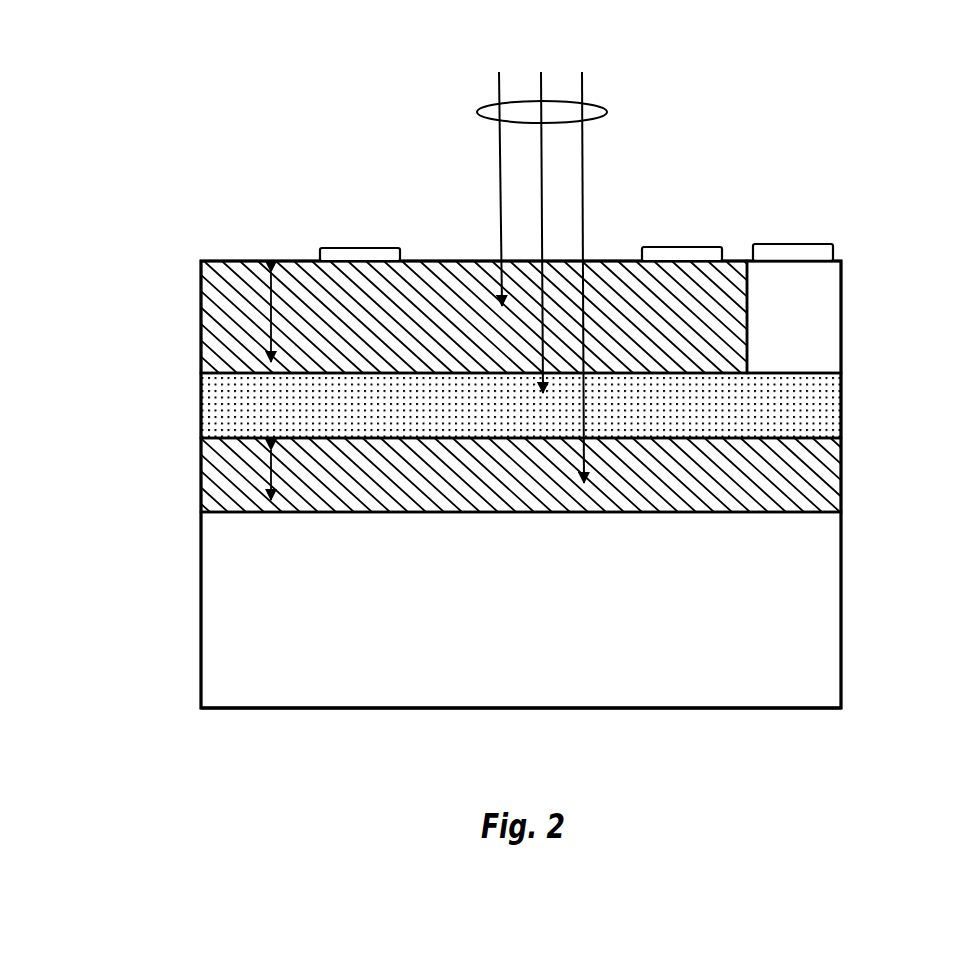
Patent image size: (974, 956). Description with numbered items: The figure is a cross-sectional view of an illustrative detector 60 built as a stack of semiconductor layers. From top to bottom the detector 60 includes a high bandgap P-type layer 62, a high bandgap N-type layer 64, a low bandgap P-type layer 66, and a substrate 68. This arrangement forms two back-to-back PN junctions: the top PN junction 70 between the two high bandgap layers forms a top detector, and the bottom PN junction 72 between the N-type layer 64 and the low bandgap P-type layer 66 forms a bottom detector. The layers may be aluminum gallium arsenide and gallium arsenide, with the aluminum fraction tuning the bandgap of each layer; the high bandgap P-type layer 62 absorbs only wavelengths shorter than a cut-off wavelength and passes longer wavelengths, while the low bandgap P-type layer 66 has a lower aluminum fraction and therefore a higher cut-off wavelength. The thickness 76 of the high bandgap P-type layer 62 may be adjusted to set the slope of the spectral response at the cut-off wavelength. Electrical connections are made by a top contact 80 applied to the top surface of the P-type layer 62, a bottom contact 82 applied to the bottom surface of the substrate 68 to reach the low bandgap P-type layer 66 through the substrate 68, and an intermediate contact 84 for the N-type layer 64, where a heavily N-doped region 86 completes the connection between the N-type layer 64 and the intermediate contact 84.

The detector 60 is at (750, 126).
The high bandgap P-type layer 62 is at (200, 303).
The high bandgap N-type layer 64 is at (200, 415).
The low bandgap P-type layer 66 is at (200, 492).
The substrate 68 is at (200, 600).
The top PN junction 70 is at (598, 392).
The bottom PN junction 72 is at (733, 437).
The thickness 76 is at (275, 312).
The top contact 80 is at (349, 248).
The bottom contact 82 is at (735, 708).
The intermediate contact 84 is at (792, 244).
The heavily N-doped region 86 is at (841, 288).